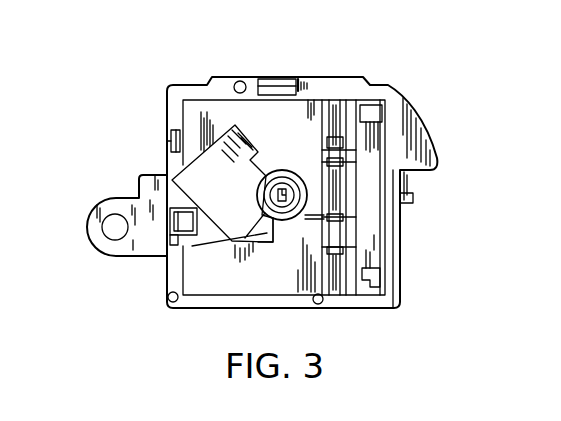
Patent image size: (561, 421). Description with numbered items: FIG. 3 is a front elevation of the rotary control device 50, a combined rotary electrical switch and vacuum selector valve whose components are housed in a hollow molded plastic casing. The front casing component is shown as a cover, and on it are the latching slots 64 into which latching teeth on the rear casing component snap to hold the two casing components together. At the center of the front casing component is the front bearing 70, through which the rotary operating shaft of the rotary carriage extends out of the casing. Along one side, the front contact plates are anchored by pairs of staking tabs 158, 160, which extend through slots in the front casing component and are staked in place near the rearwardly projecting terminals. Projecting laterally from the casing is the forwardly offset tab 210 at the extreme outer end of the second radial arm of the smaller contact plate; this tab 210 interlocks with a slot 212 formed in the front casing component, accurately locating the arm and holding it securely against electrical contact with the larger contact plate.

The rotary control device 50 is at (292, 60).
The latching slots 64 is at (170, 139).
The front bearing 70 is at (260, 217).
The staking tabs 158 is at (353, 164).
The staking tabs 160 is at (353, 147).
The forwardly offset tab 210 is at (168, 195).
The slot 212 is at (183, 242).